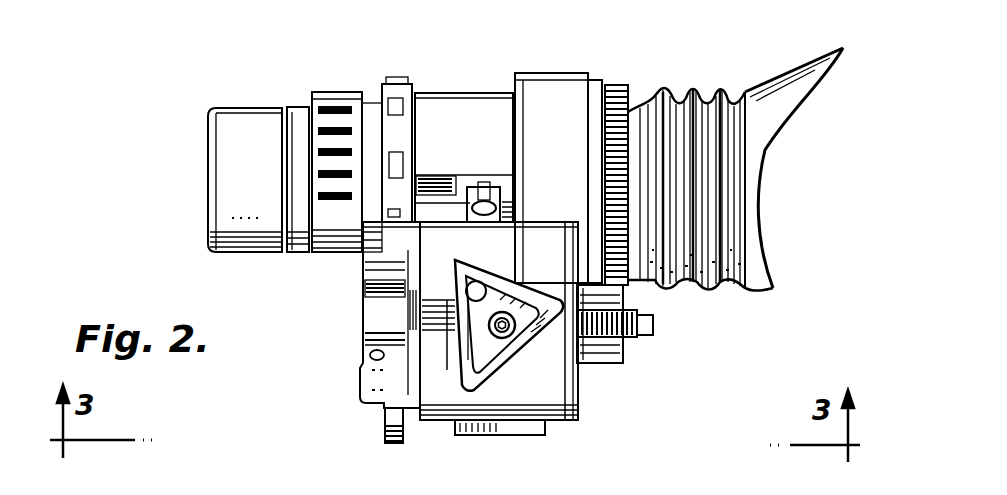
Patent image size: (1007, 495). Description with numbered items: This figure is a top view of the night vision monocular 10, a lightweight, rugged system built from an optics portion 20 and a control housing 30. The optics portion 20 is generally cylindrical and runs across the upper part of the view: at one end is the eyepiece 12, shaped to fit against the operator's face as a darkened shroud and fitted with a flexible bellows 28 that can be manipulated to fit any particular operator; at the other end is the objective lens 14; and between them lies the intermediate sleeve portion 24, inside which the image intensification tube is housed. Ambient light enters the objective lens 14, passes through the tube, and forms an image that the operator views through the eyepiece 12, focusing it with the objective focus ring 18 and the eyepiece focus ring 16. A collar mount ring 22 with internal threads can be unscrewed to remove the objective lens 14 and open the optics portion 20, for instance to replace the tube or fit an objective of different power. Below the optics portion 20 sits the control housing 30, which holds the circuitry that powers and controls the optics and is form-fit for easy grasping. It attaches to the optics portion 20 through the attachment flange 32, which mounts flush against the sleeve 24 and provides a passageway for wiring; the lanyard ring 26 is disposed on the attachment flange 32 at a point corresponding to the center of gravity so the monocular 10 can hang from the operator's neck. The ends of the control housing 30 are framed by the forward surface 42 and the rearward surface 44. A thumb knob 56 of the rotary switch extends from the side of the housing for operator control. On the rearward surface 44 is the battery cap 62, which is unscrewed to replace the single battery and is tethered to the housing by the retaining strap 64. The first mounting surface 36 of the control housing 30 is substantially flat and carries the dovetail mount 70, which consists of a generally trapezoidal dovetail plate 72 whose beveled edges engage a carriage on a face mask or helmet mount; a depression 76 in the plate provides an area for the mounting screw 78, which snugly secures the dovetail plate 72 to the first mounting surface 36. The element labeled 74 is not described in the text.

The night vision monocular 10 is at (170, 86).
The eyepiece 12 is at (776, 84).
The objective lens 14 is at (210, 178).
The eyepiece focus ring 16 is at (617, 84).
The objective focus ring 18 is at (330, 94).
The optics portion 20 is at (288, 271).
The collar mount ring 22 is at (390, 85).
The intermediate sleeve portion 24 is at (428, 93).
The lanyard ring 26 is at (484, 182).
The flexible bellows 28 is at (723, 182).
The control housing 30 is at (565, 442).
The attachment flange 32 is at (435, 195).
The first mounting surface 36 is at (545, 388).
The forward surface 42 is at (360, 366).
The rearward surface 44 is at (562, 377).
The thumb knob 56 is at (385, 420).
The battery cap 62 is at (620, 290).
The retaining strap 64 is at (653, 327).
The dovetail mount 70 is at (452, 372).
The dovetail plate 72 is at (523, 282).
The wedge 74 is at (467, 435).
The depression 76 is at (492, 285).
The mounting screw 78 is at (487, 330).